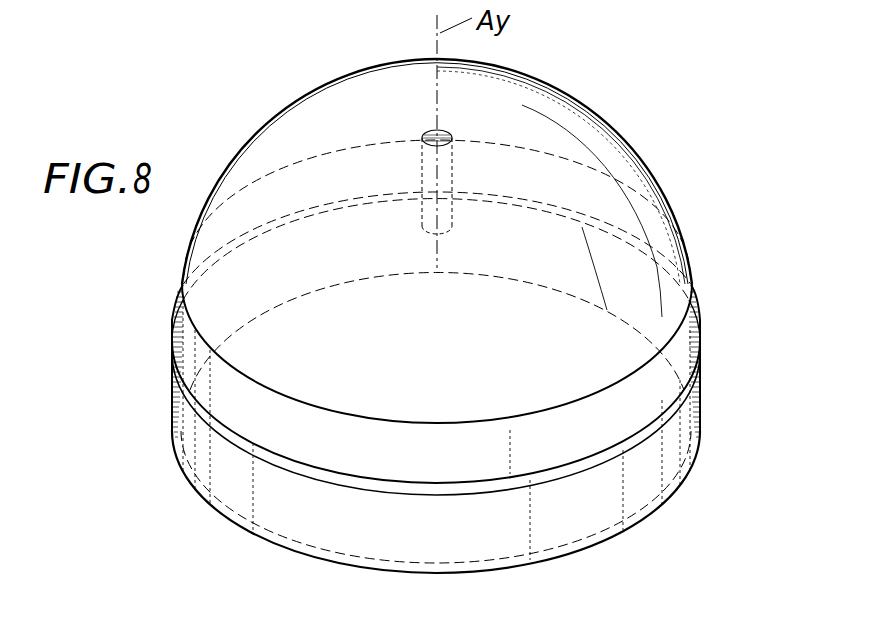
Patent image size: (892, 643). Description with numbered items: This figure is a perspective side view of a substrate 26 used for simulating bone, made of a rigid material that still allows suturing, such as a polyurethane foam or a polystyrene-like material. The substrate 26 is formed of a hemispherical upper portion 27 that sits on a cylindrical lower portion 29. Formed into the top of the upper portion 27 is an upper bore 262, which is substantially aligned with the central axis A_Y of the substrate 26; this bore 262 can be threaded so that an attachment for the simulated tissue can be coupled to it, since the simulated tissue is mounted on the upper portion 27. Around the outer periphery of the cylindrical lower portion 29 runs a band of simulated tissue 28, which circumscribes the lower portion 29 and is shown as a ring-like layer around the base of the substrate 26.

The substrate 26 is at (632, 98).
The hemispherical upper portion 27 is at (287, 120).
The upper bore 262 is at (423, 135).
The band of simulated tissue 28 is at (697, 413).
The cylindrical lower portion 29 is at (697, 322).